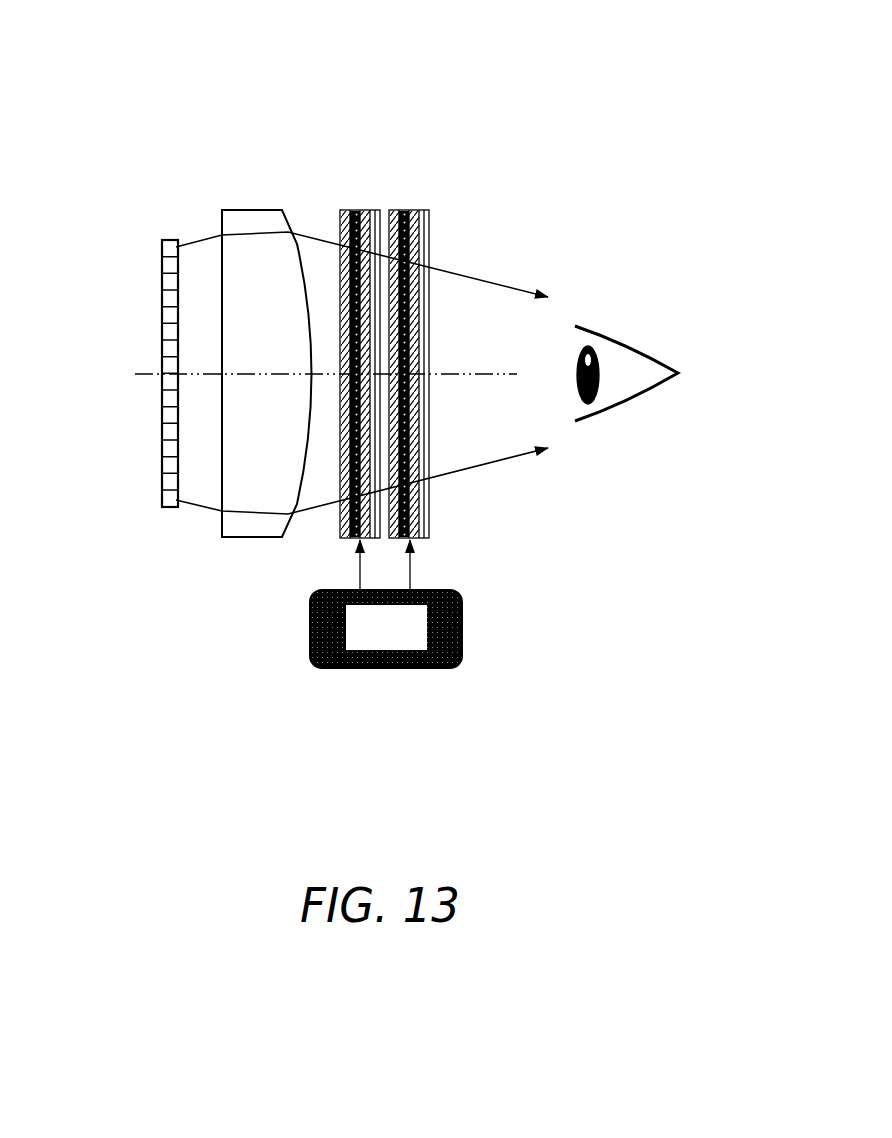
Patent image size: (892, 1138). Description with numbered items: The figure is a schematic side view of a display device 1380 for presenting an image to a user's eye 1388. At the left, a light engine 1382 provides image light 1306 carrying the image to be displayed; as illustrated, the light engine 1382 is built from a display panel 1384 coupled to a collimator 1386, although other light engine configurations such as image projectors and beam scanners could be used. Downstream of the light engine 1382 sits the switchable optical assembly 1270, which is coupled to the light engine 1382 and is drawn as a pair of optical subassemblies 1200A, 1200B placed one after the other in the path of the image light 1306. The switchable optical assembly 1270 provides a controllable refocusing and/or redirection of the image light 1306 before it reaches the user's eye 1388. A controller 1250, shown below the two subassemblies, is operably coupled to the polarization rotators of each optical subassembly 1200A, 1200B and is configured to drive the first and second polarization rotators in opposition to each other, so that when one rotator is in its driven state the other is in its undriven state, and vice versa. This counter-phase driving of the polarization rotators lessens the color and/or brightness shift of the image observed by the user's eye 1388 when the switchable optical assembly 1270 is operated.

The display device 1380 is at (411, 34).
The light engine 1382 is at (310, 195).
The display panel 1384 is at (162, 273).
The collimator 1386 is at (252, 523).
The first optical subassembly 1200A is at (360, 197).
The second optical subassembly 1200B is at (413, 197).
The switchable optical assembly 1270 is at (478, 212).
The image light 1306 is at (520, 456).
The user's eye 1388 is at (645, 347).
The controller 1250 is at (412, 638).